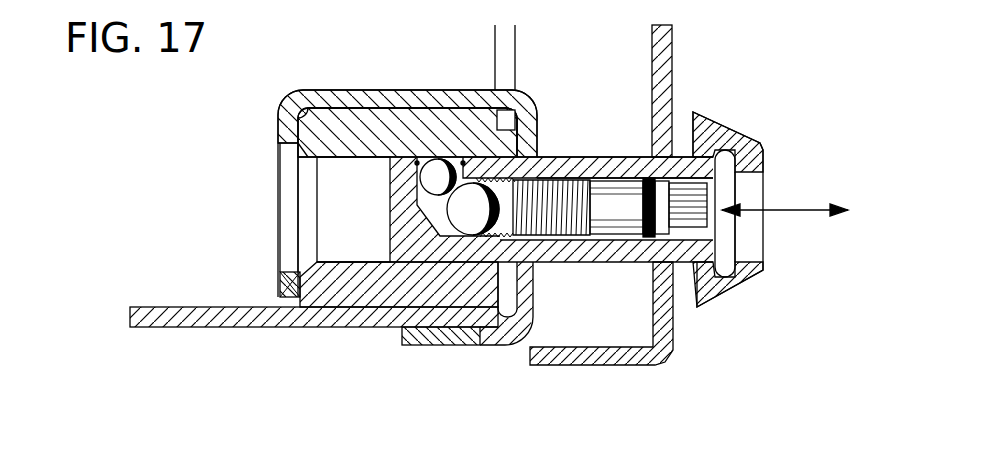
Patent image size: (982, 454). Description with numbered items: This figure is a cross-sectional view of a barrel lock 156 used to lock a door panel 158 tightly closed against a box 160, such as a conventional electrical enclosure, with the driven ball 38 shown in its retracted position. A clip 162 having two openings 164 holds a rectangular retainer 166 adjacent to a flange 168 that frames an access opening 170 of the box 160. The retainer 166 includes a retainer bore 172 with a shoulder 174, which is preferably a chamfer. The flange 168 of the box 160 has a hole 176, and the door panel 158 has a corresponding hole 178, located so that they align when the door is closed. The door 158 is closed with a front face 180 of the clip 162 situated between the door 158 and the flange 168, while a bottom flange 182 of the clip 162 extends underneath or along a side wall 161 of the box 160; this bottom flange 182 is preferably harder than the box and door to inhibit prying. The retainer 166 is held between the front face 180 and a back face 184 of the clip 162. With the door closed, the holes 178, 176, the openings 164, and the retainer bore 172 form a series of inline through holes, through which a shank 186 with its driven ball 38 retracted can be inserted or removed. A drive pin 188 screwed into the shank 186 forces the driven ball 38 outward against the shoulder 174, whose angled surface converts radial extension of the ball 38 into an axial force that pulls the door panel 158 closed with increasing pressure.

The driven ball 38 is at (440, 172).
The barrel lock 156 is at (802, 168).
The door panel 158 is at (672, 64).
The box 160 is at (240, 328).
The side wall 161 is at (413, 346).
The clip 162 is at (356, 90).
The openings 164 is at (287, 233).
The retainer 166 is at (414, 108).
The flange 168 is at (518, 288).
The access opening 170 is at (508, 60).
The retainer bore 172 is at (353, 158).
The shoulder 174 is at (280, 160).
The hole 176 is at (496, 258).
The hole 178 is at (668, 262).
The front face 180 is at (530, 133).
The bottom flange 182 is at (436, 346).
The back face 184 is at (280, 288).
The shank 186 is at (630, 155).
The drive pin 188 is at (618, 234).